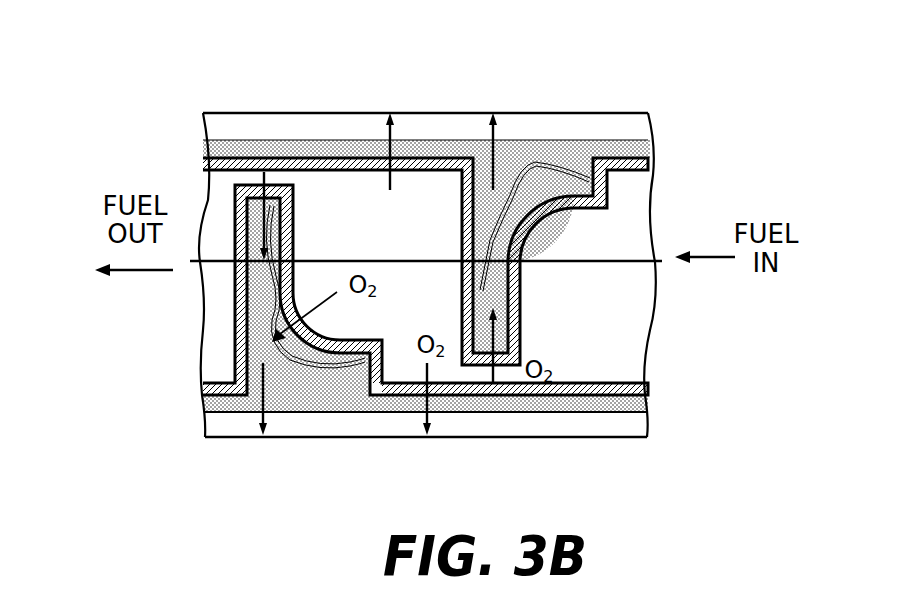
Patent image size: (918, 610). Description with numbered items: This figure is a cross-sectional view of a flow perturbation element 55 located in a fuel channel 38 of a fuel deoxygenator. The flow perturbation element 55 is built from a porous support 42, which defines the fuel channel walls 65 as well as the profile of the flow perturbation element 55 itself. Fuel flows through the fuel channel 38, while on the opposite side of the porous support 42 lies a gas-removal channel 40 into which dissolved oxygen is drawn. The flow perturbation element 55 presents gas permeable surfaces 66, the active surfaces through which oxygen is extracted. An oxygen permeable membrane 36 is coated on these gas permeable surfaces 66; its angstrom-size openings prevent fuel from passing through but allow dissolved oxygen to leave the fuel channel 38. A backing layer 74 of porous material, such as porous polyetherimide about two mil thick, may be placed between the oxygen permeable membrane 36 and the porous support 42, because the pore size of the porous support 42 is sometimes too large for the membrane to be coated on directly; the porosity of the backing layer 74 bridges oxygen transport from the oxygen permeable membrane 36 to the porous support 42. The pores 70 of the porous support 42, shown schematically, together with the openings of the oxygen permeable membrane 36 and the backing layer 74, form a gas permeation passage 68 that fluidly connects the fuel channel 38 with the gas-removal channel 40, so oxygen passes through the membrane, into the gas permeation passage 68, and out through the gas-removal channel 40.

The oxygen permeable membrane 36 is at (520, 317).
The fuel channel 38 is at (606, 240).
The gas-removal channel 40 is at (648, 118).
The porous support 42 is at (648, 145).
The flow perturbation element 55 is at (438, 233).
The fuel channel wall 65 is at (338, 172).
The gas permeable surface 66 is at (245, 185).
The gas permeation passage 68 is at (240, 357).
The pore 70 is at (530, 182).
The backing layer 74 is at (215, 398).